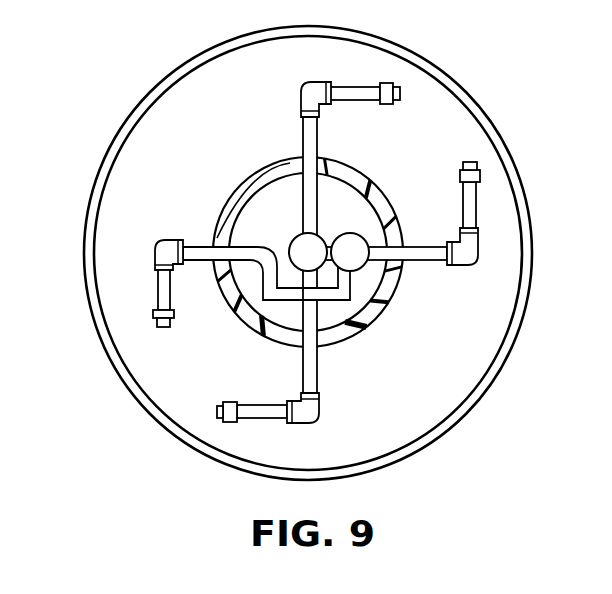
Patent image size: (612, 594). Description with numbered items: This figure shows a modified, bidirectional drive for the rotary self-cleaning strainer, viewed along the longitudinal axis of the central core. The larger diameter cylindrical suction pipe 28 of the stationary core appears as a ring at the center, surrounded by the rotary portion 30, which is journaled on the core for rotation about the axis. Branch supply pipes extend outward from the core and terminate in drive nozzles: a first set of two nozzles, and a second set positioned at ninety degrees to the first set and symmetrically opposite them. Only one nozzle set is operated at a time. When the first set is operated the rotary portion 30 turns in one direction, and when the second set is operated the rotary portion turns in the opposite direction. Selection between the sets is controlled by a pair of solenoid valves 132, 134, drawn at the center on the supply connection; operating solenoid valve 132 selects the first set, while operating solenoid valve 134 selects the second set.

The suction pipe 28 is at (372, 196).
The rotary portion 30 is at (533, 308).
The solenoid valve 132 is at (293, 237).
The solenoid valve 134 is at (369, 266).